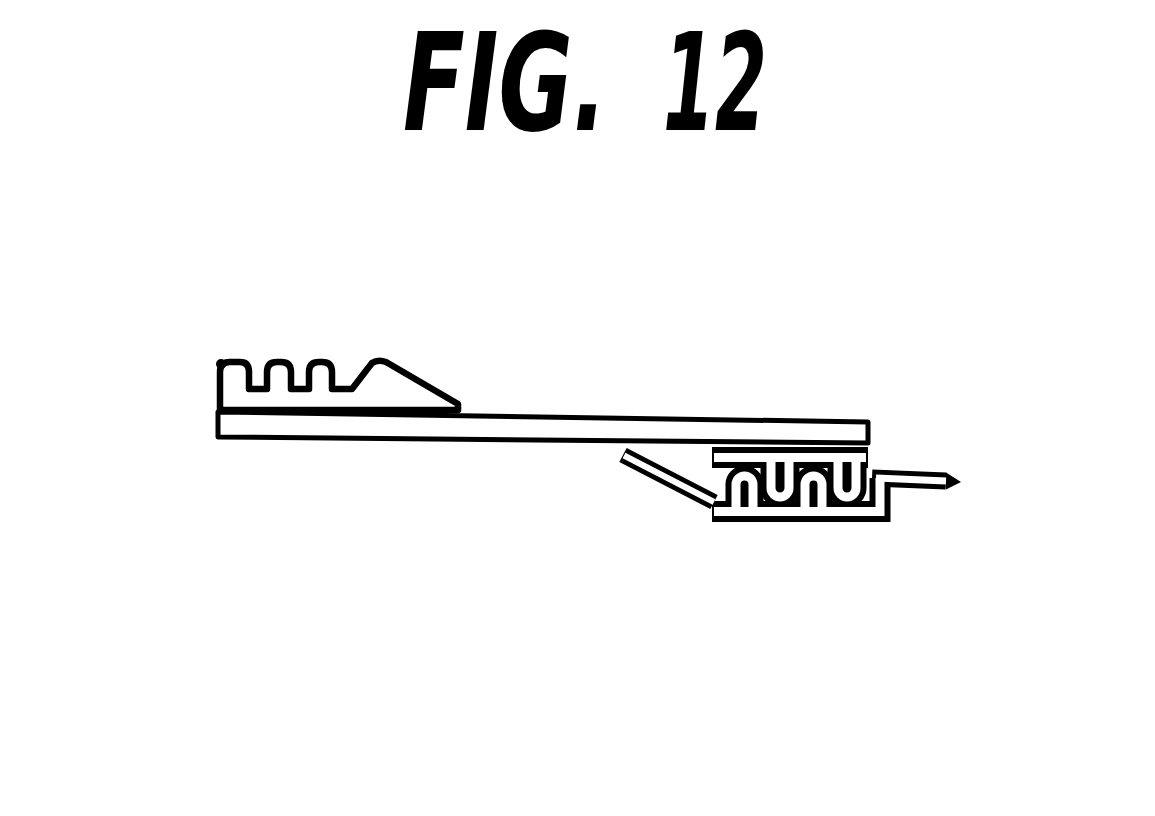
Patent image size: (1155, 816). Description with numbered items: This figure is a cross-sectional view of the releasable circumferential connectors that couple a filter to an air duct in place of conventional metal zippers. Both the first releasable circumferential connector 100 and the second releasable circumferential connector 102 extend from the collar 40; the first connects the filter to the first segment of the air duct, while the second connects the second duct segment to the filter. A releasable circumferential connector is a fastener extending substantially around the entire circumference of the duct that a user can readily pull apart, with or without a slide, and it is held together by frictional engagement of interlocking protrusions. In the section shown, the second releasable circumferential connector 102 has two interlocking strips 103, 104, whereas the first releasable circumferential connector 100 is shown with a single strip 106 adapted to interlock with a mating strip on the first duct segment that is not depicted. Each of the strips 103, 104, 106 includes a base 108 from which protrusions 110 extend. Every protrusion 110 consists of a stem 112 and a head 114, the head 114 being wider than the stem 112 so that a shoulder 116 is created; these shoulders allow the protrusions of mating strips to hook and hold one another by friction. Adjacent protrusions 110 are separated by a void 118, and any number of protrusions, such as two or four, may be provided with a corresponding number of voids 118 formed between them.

The collar 40 is at (593, 427).
The first releasable circumferential connector 100 is at (345, 314).
The second releasable circumferential connector 102 is at (815, 572).
The interlocking strip 103 is at (647, 460).
The interlocking strip 104 is at (947, 472).
The strip 106 is at (427, 390).
The base 108 is at (301, 397).
The protrusion 110 is at (206, 380).
The stem 112 is at (352, 357).
The head 114 is at (327, 367).
The shoulder 116 is at (300, 357).
The void 118 is at (257, 377).